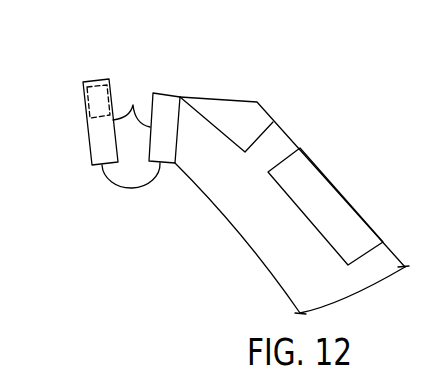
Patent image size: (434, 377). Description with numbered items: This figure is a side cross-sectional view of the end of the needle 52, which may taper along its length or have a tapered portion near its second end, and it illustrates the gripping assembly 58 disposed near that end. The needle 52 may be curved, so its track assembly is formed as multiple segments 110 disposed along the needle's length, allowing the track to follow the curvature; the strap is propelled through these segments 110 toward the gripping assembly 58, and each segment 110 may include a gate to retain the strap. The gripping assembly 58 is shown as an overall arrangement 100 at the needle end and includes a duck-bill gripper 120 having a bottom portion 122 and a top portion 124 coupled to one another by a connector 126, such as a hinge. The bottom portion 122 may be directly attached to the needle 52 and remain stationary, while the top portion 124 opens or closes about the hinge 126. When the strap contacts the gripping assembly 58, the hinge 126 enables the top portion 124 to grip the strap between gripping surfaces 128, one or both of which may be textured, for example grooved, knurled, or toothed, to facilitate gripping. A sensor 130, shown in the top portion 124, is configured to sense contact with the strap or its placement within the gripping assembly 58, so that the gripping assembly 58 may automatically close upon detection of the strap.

The needle 52 is at (289, 133).
The gripping assembly 58 is at (162, 68).
The arm assembly 100 is at (238, 76).
The segments 110 is at (253, 110).
The duck-bill gripper 120 is at (70, 90).
The bottom portion 122 is at (165, 152).
The top portion 124 is at (100, 139).
The connector 126 is at (134, 189).
The gripping surfaces 128 is at (133, 105).
The sensor 130 is at (94, 85).